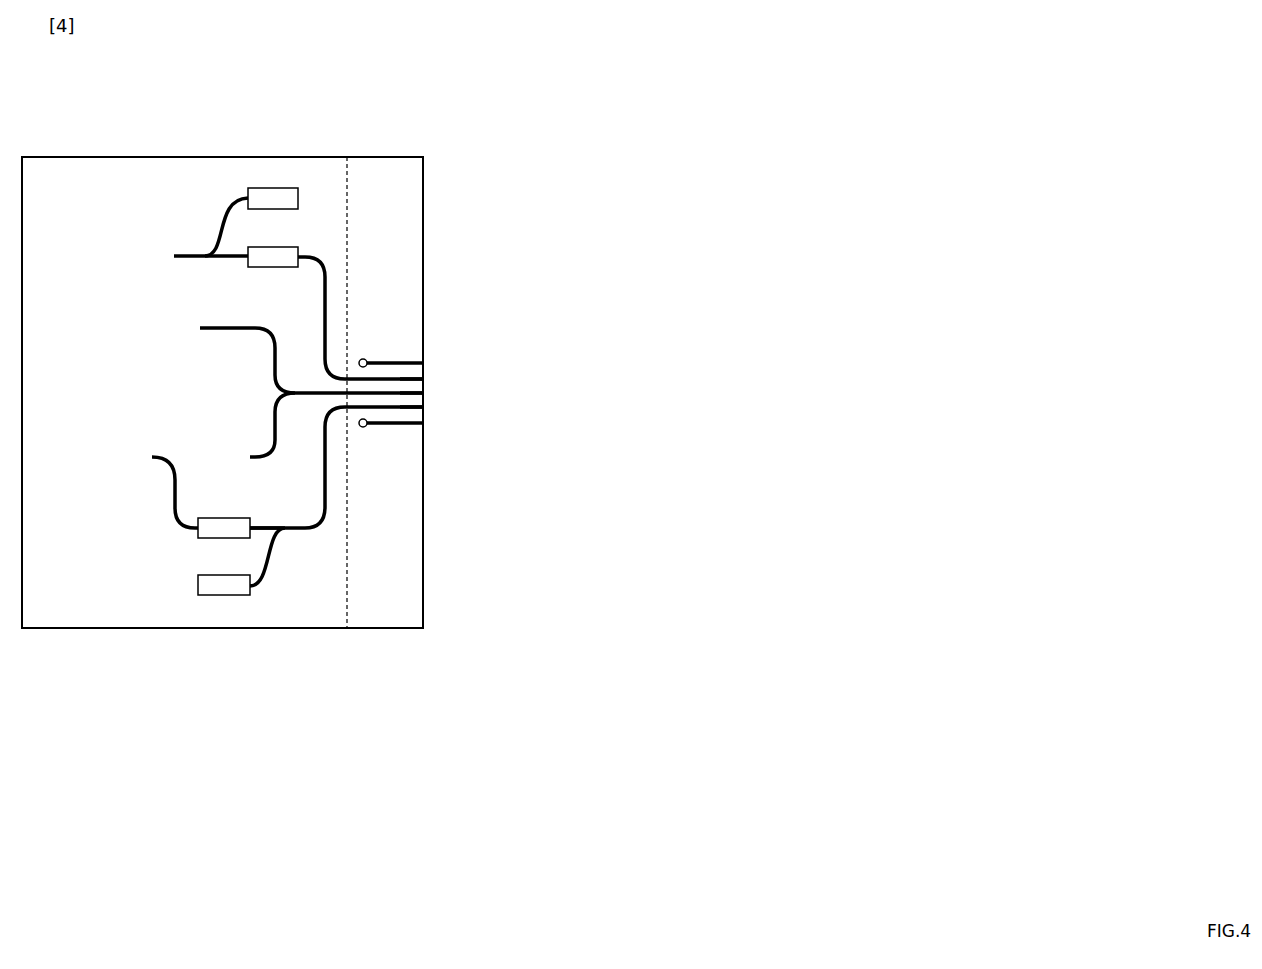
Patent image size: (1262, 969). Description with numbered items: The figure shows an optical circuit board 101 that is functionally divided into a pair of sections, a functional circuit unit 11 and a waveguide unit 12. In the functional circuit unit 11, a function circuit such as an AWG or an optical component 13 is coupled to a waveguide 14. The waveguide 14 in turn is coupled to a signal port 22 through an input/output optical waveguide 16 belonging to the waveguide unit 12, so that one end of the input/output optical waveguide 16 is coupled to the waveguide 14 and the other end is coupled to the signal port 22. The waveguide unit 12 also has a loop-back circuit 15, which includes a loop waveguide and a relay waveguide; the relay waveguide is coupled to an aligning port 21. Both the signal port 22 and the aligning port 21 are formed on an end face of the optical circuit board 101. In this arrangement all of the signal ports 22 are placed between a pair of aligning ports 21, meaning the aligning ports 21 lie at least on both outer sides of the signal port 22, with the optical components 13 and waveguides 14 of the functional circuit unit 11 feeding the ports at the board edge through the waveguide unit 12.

The optical circuit board 101 is at (311, 111).
The functional circuit unit 11 is at (196, 156).
The waveguide unit 12 is at (388, 156).
The optical component 13 is at (267, 187).
The waveguide 14 is at (182, 259).
The loop-back circuit 15 is at (365, 359).
The input/output optical waveguide 16 is at (396, 411).
The aligning port 21 is at (425, 365).
The signal port 22 is at (425, 374).